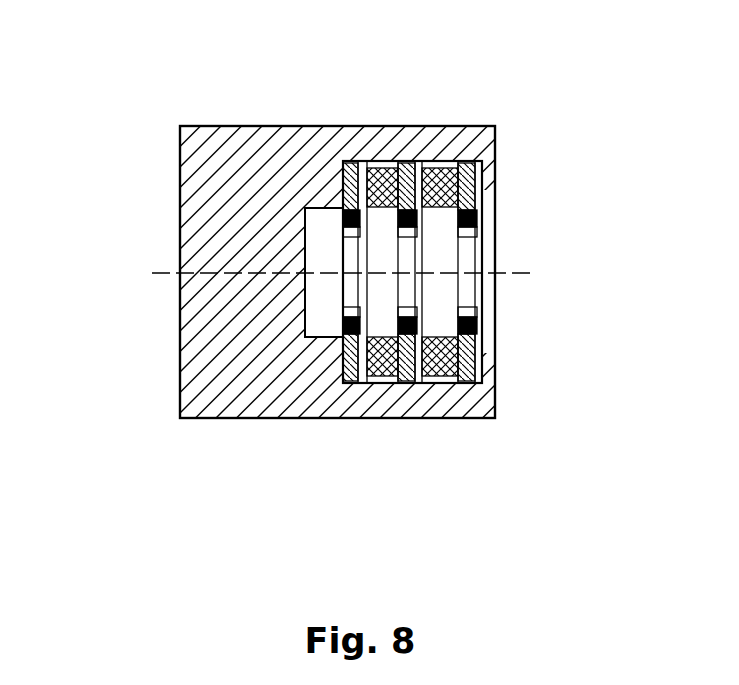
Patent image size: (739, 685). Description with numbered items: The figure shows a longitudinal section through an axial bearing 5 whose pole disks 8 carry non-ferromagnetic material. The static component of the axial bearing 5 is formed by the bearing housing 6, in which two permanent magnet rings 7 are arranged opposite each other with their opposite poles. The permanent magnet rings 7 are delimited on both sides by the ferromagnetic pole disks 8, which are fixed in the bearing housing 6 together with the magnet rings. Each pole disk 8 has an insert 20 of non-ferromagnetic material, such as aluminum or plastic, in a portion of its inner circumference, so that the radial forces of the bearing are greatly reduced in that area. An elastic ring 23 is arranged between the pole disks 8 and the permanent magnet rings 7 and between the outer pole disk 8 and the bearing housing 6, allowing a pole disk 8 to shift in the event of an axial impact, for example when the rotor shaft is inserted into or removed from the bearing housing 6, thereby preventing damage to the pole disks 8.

The axial bearing 5 is at (224, 97).
The bearing housing 6 is at (193, 222).
The permanent magnet rings 7 is at (381, 378).
The pole disks 8 is at (340, 380).
The insert 20 is at (462, 218).
The elastic ring 23 is at (403, 163).